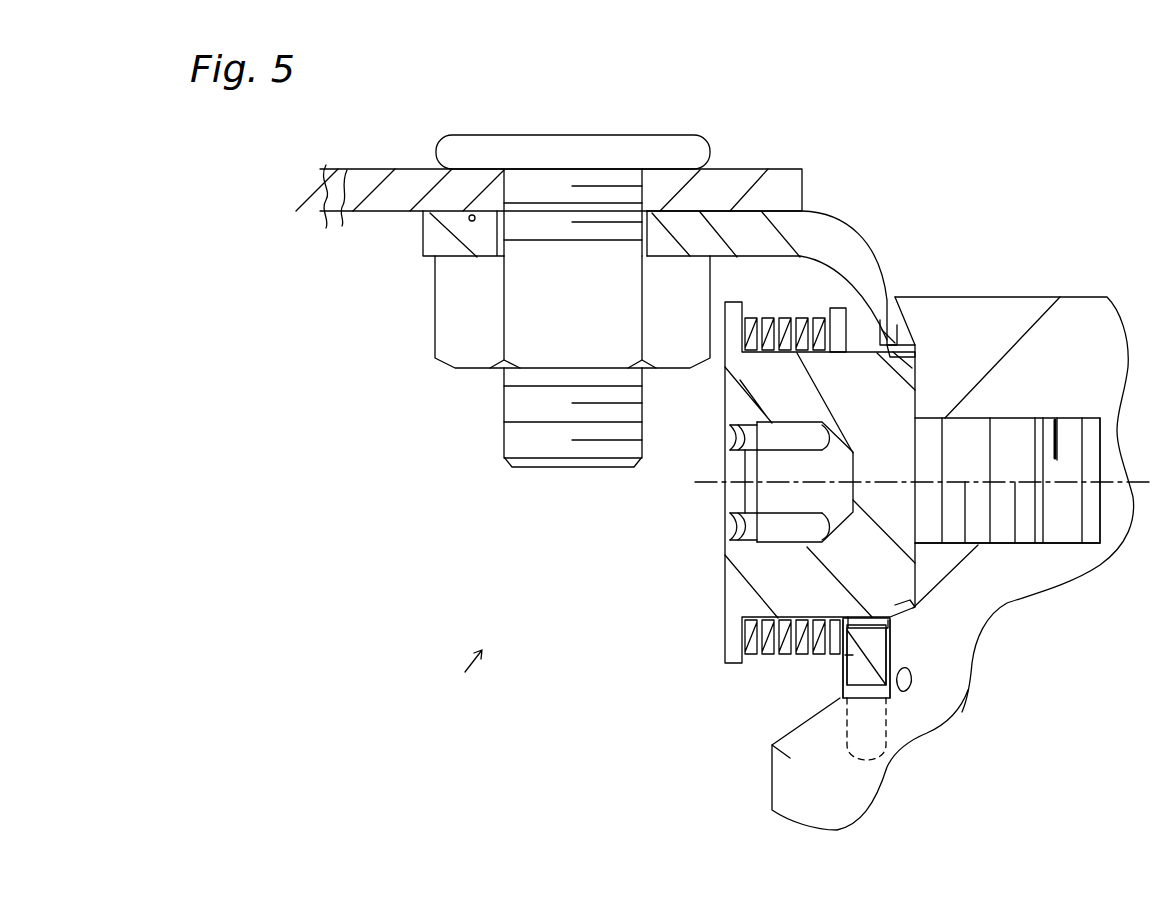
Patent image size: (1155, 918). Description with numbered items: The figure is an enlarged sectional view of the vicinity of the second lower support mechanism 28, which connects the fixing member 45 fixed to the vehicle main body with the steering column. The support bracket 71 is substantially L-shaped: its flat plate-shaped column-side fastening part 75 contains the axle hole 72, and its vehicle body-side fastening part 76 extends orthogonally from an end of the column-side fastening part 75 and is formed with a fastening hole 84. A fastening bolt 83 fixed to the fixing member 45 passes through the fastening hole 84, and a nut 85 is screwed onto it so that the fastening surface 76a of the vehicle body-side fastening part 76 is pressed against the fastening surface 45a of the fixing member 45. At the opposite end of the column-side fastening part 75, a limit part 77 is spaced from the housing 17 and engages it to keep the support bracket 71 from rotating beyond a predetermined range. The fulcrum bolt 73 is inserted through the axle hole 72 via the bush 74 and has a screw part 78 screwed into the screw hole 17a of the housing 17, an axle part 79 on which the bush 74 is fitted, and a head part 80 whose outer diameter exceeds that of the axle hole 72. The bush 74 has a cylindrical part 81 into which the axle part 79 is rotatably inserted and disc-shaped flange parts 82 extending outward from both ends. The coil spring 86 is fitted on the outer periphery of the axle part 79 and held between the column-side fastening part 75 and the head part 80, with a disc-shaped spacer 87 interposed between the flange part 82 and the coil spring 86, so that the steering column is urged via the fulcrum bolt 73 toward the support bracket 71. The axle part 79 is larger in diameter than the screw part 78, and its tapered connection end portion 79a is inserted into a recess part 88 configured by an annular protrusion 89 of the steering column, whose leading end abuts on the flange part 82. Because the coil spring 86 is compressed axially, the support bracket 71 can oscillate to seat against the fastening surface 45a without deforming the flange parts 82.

The housing 17 is at (1027, 297).
The screw hole 17a is at (1070, 426).
The second lower support mechanism 28 is at (462, 680).
The fixing member 45 is at (414, 178).
The fastening surface 45a is at (355, 185).
The support bracket 71 is at (852, 212).
The axle hole 72 is at (907, 350).
The fulcrum bolt 73 is at (722, 433).
The bush 74 is at (893, 318).
The column-side fastening part 75 is at (848, 690).
The vehicle body-side fastening part 76 is at (428, 238).
The fastening surface 76a is at (472, 222).
The limit part 77 is at (882, 768).
The screw part 78 is at (1000, 545).
The axle part 79 is at (776, 652).
The connection end portion 79a is at (908, 366).
The head part 80 is at (725, 586).
The cylindrical part 81 is at (876, 618).
The flange part 82 is at (898, 634).
The fastening bolt 83 is at (568, 135).
The fastening hole 84 is at (650, 252).
The nut 85 is at (465, 350).
The coil spring 86 is at (762, 318).
The spacer 87 is at (838, 310).
The recess part 88 is at (918, 605).
The protrusion 89 is at (908, 690).